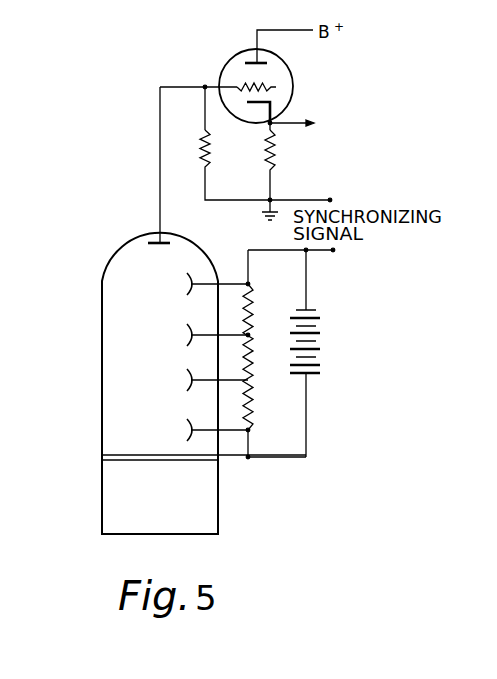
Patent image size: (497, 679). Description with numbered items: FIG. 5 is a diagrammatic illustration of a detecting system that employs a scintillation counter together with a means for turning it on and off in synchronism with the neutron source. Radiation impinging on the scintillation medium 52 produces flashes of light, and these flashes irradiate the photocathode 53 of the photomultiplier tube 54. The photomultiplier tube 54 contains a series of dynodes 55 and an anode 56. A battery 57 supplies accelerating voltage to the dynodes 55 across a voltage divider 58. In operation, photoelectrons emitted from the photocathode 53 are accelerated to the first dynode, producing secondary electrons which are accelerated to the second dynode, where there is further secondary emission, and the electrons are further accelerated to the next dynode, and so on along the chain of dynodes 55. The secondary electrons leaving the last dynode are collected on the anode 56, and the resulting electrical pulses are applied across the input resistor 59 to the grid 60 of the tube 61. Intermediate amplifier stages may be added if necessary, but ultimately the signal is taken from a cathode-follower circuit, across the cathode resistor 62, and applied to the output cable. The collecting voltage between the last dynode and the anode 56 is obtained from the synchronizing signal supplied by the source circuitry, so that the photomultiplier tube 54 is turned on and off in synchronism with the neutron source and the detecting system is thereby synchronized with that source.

The scintillation medium 52 is at (102, 515).
The photocathode 53 is at (102, 456).
The photomultiplier tube 54 is at (101, 346).
The dynodes 55 is at (190, 373).
The anode 56 is at (156, 240).
The battery 57 is at (320, 340).
The voltage divider 58 is at (252, 400).
The input resistor 59 is at (203, 155).
The grid 60 is at (262, 84).
The tube 61 is at (234, 58).
The cathode resistor 62 is at (273, 152).